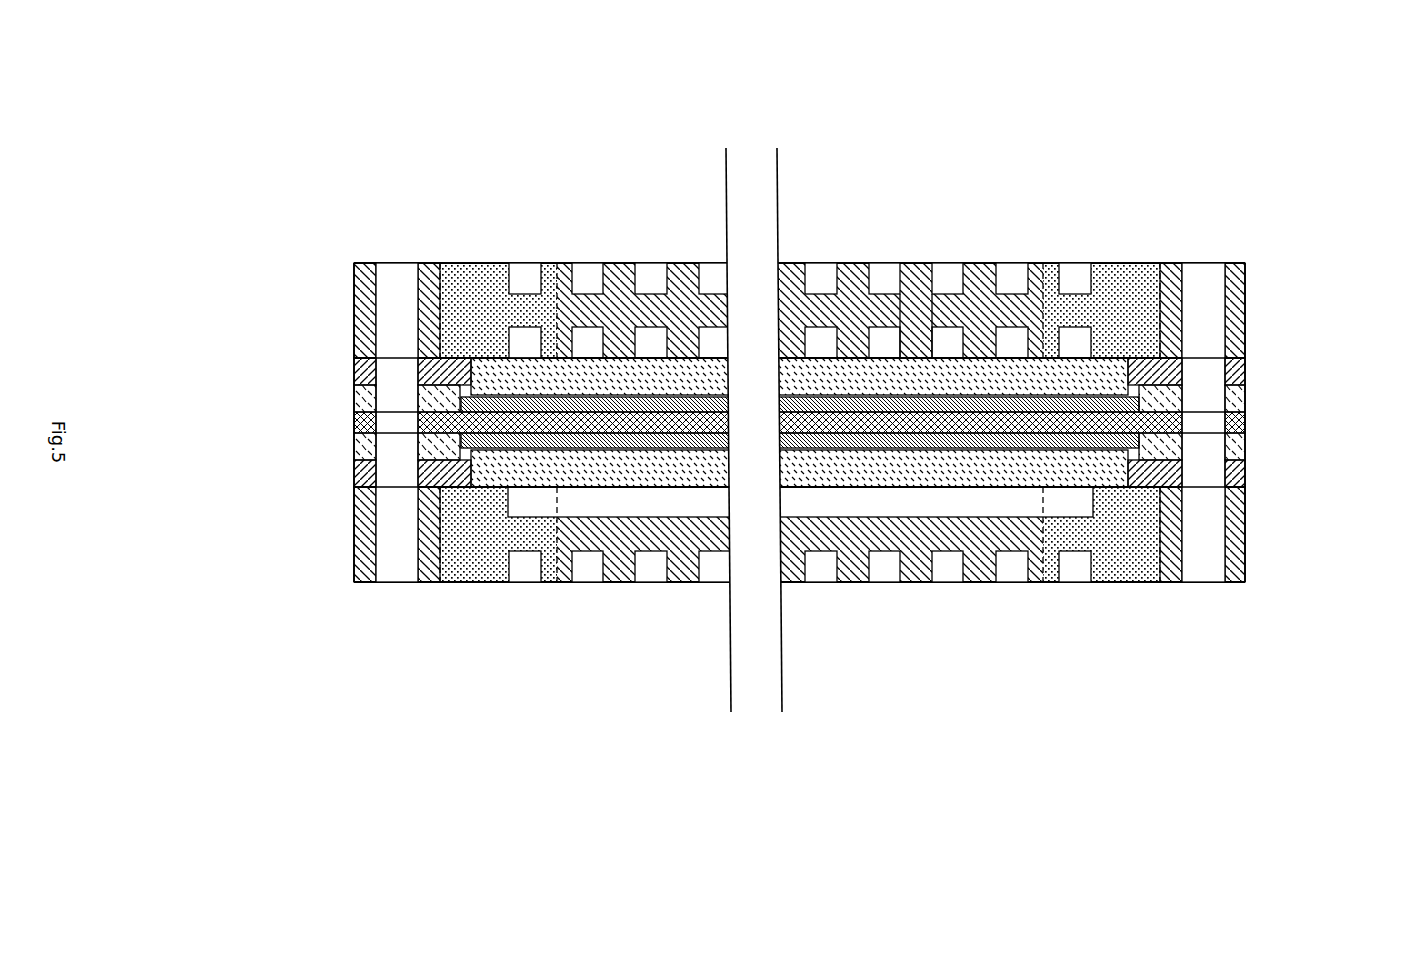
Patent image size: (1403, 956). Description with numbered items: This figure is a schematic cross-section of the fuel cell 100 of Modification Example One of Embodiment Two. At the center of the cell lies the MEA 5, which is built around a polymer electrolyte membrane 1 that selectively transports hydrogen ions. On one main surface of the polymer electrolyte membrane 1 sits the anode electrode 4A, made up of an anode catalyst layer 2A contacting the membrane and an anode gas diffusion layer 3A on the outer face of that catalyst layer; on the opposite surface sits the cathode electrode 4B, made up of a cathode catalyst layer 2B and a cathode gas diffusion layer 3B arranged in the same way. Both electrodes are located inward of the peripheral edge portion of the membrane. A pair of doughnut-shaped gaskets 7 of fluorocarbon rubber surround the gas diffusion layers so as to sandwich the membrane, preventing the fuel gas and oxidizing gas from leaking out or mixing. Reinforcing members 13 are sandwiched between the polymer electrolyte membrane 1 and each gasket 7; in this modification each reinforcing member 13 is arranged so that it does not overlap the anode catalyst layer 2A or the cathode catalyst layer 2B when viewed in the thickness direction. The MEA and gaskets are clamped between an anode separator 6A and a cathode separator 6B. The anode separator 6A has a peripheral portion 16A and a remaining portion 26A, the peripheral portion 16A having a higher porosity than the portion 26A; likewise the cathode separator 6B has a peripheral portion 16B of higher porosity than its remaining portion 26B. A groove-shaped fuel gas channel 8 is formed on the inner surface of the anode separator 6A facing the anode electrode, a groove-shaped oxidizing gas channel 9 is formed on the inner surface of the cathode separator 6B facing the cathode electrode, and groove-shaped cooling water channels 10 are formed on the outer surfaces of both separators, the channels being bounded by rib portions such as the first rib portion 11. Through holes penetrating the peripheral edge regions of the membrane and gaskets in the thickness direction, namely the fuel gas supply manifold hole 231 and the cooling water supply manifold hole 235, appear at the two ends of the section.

The fuel cell 100 is at (712, 60).
The fuel gas supply manifold hole 231 is at (399, 255).
The cooling water supply manifold hole 235 is at (1206, 255).
The cooling water channel 10 is at (527, 278).
The portion 26A is at (858, 310).
The first rib portion 11 is at (920, 350).
The fuel gas channel 8 is at (1018, 350).
The peripheral portion 16A is at (1118, 320).
The peripheral portion 16B is at (1115, 520).
The portion 26B is at (856, 565).
The oxidizing gas channel 9 is at (987, 500).
The anode separator 6A is at (1245, 305).
The cathode separator 6B is at (1245, 540).
The gasket 7 is at (355, 365).
The reinforcing member 13 is at (355, 396).
The anode gas diffusion layer 3A is at (1182, 366).
The anode catalyst layer 2A is at (1182, 403).
The polymer electrolyte membrane 1 is at (1182, 422).
The cathode catalyst layer 2B is at (1182, 442).
The cathode gas diffusion layer 3B is at (1182, 480).
The anode electrode 4A is at (1312, 342).
The cathode electrode 4B is at (1312, 437).
The MEA (Membrane-Electrode Assembly) 5 is at (1362, 360).